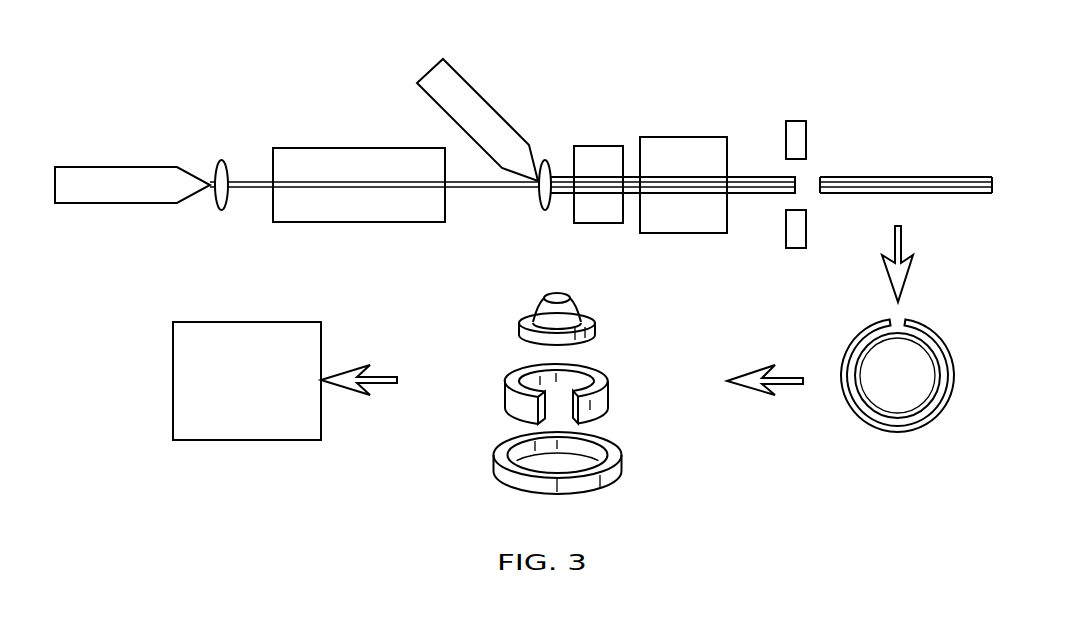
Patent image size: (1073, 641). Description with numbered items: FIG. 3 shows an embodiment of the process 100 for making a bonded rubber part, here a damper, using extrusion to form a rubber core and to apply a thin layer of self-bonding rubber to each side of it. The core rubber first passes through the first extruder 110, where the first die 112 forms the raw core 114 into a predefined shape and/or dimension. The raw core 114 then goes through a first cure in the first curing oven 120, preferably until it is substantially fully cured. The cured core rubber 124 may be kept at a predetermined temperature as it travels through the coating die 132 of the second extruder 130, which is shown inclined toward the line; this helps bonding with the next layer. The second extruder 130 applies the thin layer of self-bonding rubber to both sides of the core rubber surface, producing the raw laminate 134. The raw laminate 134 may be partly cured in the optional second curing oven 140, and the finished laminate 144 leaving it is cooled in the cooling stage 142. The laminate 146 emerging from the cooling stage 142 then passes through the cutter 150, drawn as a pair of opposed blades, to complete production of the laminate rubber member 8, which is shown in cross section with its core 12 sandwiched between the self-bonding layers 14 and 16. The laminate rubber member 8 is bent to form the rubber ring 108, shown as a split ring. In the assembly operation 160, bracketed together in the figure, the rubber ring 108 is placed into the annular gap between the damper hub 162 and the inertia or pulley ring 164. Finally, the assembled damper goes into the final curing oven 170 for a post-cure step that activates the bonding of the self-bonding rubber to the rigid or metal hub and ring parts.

The optical fiber processing system 100 is at (896, 70).
The first extruder 110 is at (105, 172).
The first die 112 is at (223, 161).
The raw core 114 is at (250, 189).
The first curing oven 120 is at (325, 150).
The cured core rubber 124 is at (497, 190).
The second extruder 130 is at (496, 118).
The coating die 132 is at (549, 163).
The raw laminate 134 is at (566, 195).
The second curing oven 140 is at (600, 152).
The cooling stage 142 is at (688, 144).
The finished laminate 144 is at (633, 195).
The beam section 146 is at (766, 195).
The cutter 150 is at (801, 122).
The laminate rubber member 8 is at (930, 170).
The self-bonding layer 14 is at (990, 176).
The core 12 is at (992, 188).
The self-bonding layer 16 is at (985, 195).
The rubber ring 108 is at (954, 390).
The assembly operation 160 is at (490, 293).
The damper hub 162 is at (597, 323).
The inertia or pulley ring 164 is at (620, 464).
The final curing oven 170 is at (240, 432).